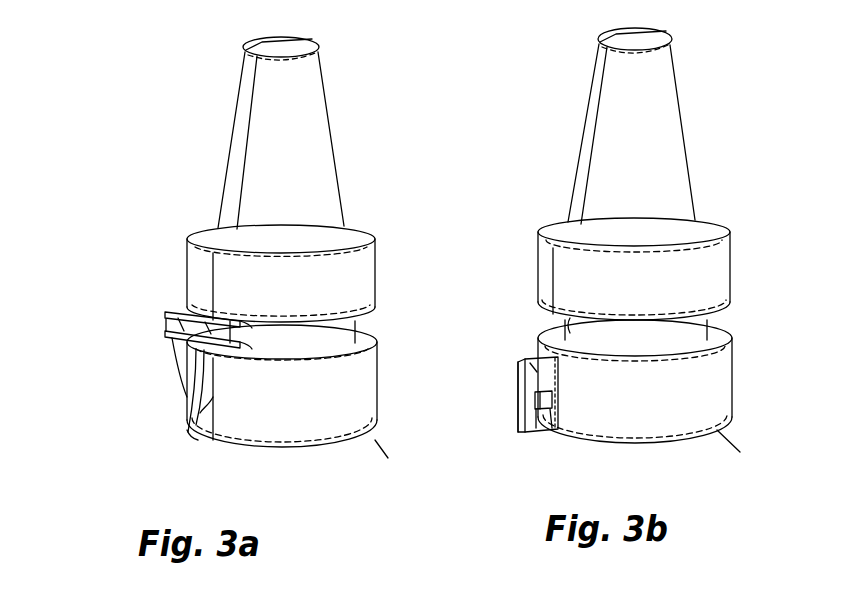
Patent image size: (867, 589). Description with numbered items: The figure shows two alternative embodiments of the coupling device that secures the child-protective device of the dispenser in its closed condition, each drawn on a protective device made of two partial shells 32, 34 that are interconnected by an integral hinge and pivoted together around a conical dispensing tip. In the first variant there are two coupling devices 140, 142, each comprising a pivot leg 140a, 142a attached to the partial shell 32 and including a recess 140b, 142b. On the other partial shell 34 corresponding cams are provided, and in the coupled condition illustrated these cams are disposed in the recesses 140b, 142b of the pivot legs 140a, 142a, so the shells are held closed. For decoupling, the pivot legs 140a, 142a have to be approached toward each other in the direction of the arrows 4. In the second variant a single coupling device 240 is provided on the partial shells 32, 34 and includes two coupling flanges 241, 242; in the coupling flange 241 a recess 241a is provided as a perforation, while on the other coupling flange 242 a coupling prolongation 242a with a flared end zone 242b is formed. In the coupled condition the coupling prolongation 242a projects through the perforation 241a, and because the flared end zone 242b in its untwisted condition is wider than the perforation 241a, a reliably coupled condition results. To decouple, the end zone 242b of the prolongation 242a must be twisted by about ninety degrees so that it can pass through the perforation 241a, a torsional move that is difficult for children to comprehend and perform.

In FIG. 3A, the partial shell 32 is at (357, 277).
In FIG. 3B, the partial shell 32 is at (727, 240).
In FIG. 3A, the partial shell 34 is at (198, 273).
In FIG. 3B, the partial shell 34 is at (540, 237).
In FIG. 3A, the arrows 4 is at (174, 310).
In FIG. 3A, the coupling device 140 is at (148, 329).
In FIG. 3A, the pivot leg 140a is at (177, 344).
In FIG. 3A, the recess 140b is at (195, 437).
In FIG. 3A, the coupling device 142 is at (155, 305).
In FIG. 3A, the pivot leg 142a is at (172, 343).
In FIG. 3A, the recess 142b is at (185, 397).
In FIG. 3B, the coupling device 240 is at (513, 407).
In FIG. 3B, the coupling flange 241 is at (517, 361).
In FIG. 3B, the recess 241a is at (520, 408).
In FIG. 3B, the coupling flange 242 is at (542, 358).
In FIG. 3B, the coupling prolongation 242a is at (535, 410).
In FIG. 3B, the flared end zone 242b is at (565, 427).